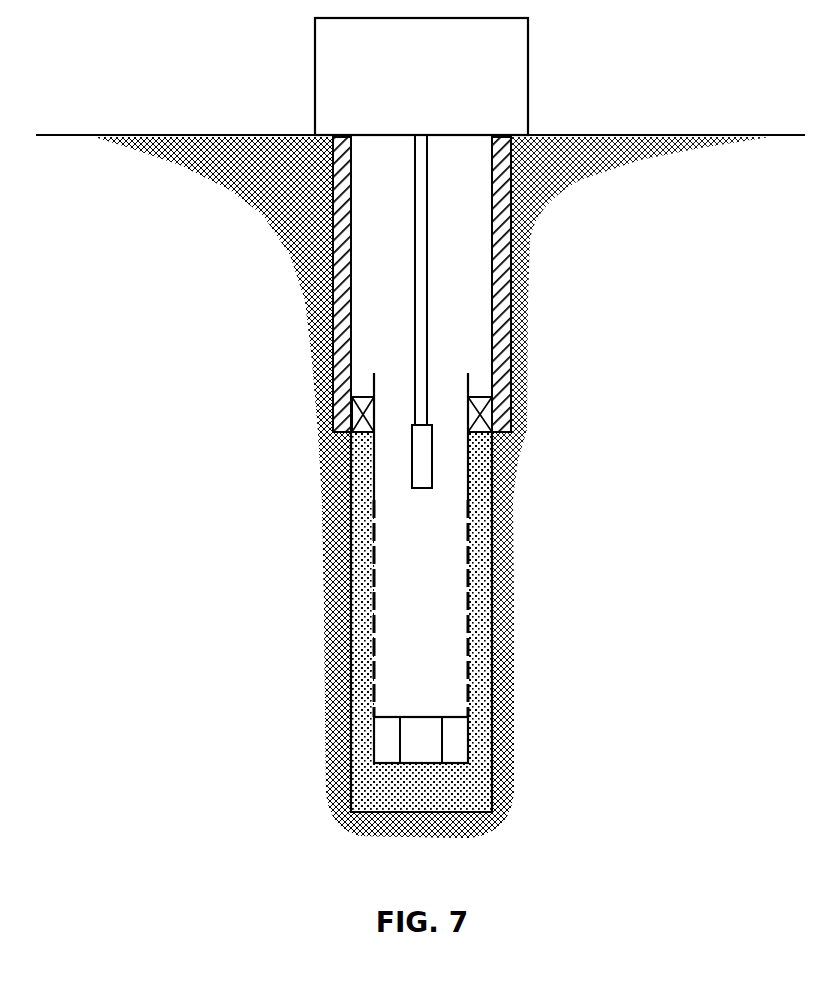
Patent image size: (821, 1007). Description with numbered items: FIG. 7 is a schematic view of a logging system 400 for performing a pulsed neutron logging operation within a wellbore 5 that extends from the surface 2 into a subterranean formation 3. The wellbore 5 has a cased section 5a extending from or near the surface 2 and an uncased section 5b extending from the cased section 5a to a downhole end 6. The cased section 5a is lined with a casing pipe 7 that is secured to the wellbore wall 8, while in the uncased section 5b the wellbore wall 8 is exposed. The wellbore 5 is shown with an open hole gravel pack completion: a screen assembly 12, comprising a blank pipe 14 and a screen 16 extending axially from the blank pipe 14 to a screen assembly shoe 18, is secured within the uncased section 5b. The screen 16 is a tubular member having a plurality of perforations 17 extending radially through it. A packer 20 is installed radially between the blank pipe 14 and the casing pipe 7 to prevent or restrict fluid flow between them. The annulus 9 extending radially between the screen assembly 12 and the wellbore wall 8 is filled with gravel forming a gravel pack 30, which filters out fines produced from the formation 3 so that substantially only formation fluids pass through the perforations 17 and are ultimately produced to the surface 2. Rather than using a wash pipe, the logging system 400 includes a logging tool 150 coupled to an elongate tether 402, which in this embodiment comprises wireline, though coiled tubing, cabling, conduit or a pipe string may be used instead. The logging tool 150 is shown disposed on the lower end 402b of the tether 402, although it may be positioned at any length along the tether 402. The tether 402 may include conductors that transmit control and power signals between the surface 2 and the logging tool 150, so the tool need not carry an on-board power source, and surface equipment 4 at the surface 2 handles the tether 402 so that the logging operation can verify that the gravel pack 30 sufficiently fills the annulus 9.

The surface 2 is at (726, 135).
The subterranean formation 3 is at (332, 740).
The surface equipment 4 is at (315, 50).
The wellbore 5 is at (494, 483).
The cased section 5a is at (322, 293).
The uncased section 5b is at (335, 578).
The downhole end 6 is at (355, 812).
The casing pipe 7 is at (512, 283).
The wellbore wall 8 is at (487, 628).
The annulus 9 is at (360, 667).
The screen assembly 12 is at (476, 448).
The blank pipe 14 is at (373, 383).
The screen 16 is at (371, 554).
The perforations 17 is at (373, 631).
The screen assembly shoe 18 is at (472, 745).
The packer 20 is at (483, 396).
The gravel pack 30 is at (472, 795).
The logging tool 150 is at (412, 472).
The logging system 400 is at (443, 250).
The tether 402 is at (415, 160).
The lower end of tether 402b is at (412, 427).